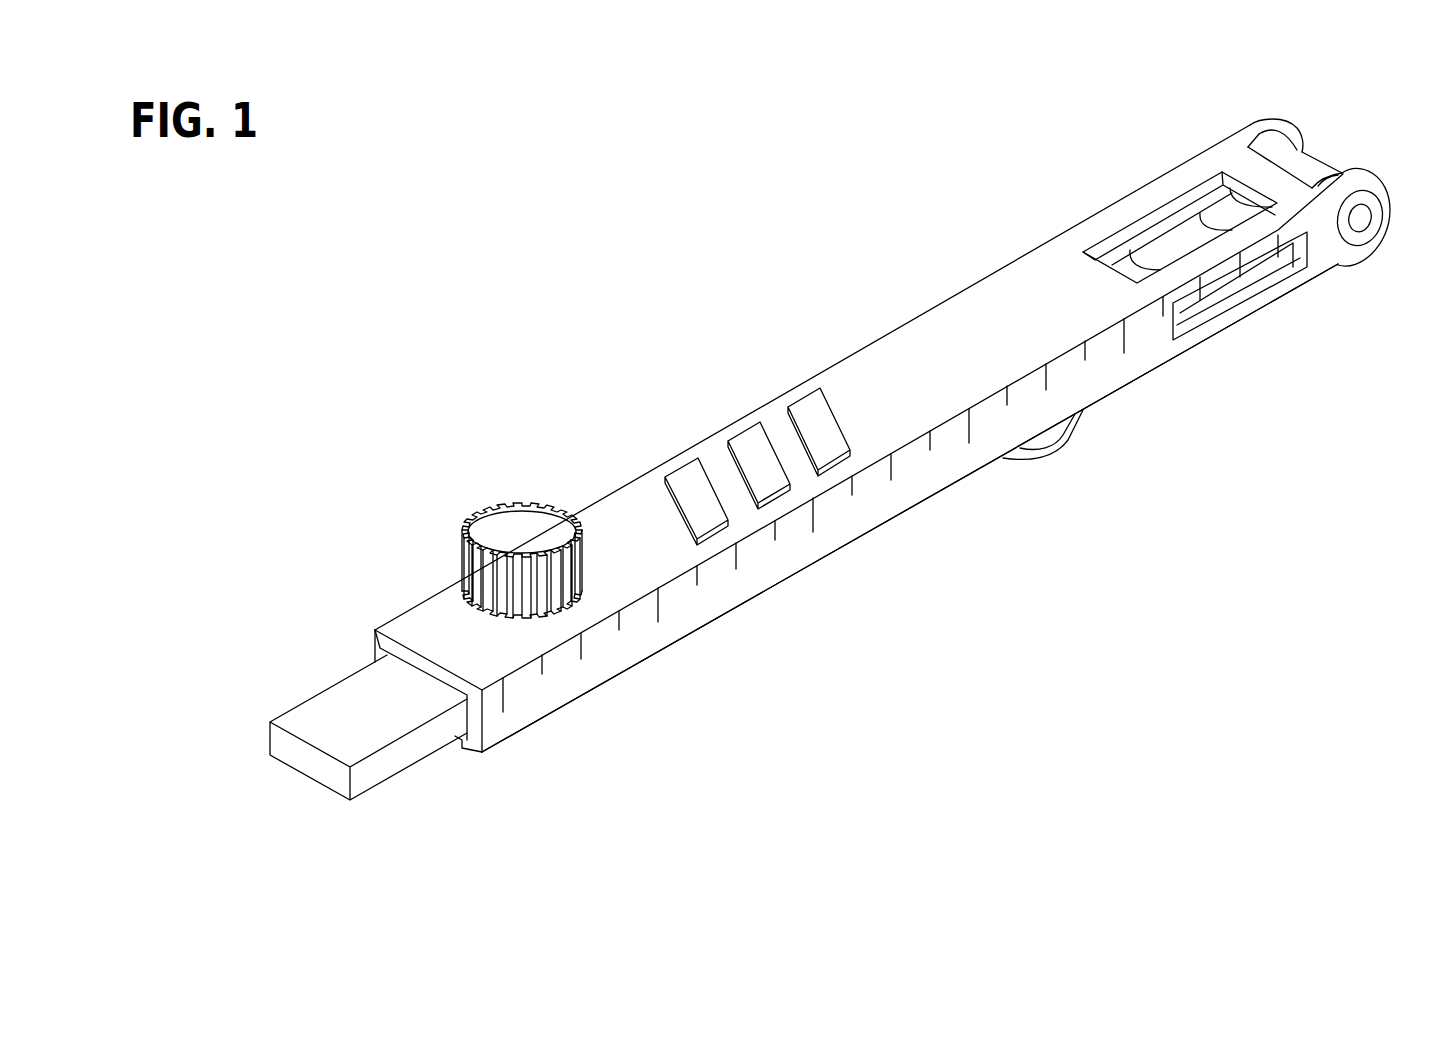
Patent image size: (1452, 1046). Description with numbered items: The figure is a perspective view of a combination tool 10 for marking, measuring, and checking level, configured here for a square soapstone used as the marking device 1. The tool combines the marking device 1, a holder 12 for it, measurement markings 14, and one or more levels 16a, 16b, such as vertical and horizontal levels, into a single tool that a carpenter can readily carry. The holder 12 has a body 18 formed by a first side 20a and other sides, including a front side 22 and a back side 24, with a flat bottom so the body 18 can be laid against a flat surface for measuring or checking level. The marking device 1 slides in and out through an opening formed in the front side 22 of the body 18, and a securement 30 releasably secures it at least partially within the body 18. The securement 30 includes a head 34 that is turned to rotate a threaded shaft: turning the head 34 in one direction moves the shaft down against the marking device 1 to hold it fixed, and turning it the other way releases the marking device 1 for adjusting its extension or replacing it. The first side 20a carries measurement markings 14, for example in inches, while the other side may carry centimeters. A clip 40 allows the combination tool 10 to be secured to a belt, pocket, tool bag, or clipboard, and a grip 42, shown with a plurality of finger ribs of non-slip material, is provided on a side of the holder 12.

The marking device 1 is at (318, 693).
The combination tool 10 is at (595, 288).
The holder 12 is at (410, 608).
The measurement markings 14 is at (890, 482).
The level 16a is at (1186, 222).
The level 16b is at (1313, 158).
The body 18 is at (927, 315).
The first side 20a is at (1125, 380).
The front side 22 is at (460, 745).
The back side 24 is at (1370, 180).
The securement 30 is at (522, 505).
The head 34 is at (463, 577).
The clip 40 is at (1044, 455).
The grip 42 is at (818, 390).